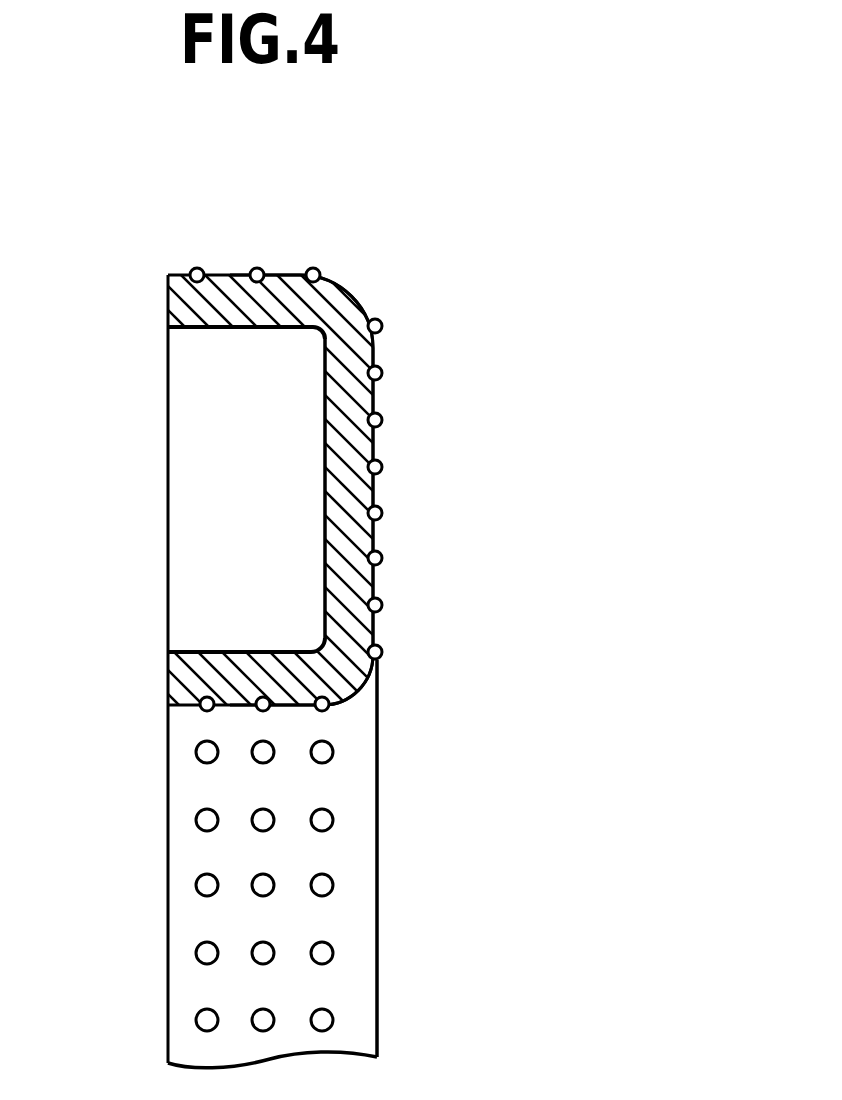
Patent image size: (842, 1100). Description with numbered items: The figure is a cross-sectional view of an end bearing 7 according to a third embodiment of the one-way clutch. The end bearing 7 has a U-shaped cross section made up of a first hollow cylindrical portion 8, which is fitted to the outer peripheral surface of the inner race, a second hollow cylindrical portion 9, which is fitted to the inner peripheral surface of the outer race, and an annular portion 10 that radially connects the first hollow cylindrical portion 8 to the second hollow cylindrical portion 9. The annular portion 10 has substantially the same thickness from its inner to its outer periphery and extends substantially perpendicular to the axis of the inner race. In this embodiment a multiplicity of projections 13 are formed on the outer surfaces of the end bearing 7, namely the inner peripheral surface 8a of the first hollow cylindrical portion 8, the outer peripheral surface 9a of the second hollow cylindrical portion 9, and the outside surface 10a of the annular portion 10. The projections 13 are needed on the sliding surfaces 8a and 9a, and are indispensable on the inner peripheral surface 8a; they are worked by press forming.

The end bearing 7 is at (410, 312).
The first hollow cylindrical portion 8 is at (207, 682).
The inner peripheral surface 8a is at (290, 707).
The second hollow cylindrical portion 9 is at (193, 300).
The outer peripheral surface 9a is at (287, 273).
The annular portion 10 is at (363, 545).
The outside surface 10a is at (375, 443).
The projections 13 is at (257, 268).